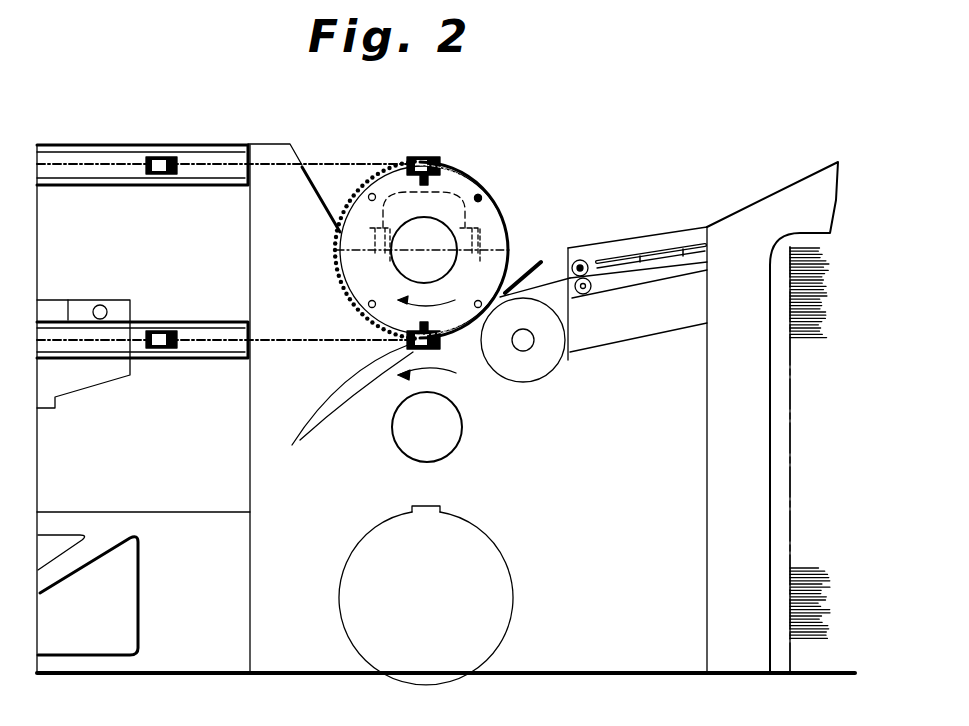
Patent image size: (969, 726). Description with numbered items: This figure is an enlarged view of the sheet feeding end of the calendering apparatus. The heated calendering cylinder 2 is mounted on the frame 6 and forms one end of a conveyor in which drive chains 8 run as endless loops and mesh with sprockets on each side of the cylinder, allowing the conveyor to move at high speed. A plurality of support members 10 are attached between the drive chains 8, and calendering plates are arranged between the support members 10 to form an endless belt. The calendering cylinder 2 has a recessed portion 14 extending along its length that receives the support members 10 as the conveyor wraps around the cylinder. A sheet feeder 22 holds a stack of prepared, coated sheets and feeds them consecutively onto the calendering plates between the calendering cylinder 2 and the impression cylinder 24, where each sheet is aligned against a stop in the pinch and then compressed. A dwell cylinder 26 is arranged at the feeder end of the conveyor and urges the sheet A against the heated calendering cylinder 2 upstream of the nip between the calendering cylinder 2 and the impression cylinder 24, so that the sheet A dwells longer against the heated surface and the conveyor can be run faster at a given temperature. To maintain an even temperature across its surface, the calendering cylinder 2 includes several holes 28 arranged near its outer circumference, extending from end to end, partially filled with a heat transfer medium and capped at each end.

The calendering cylinder 2 is at (462, 188).
The frame 6 is at (160, 667).
The drive chains 8 is at (326, 160).
The support members 10 is at (150, 156).
The recessed portion 14 is at (455, 615).
The sheet feeder 22 is at (795, 196).
The impression cylinder 24 is at (388, 488).
The dwell cylinder 26 is at (541, 365).
The holes 28 is at (482, 197).
The sheet A is at (534, 272).